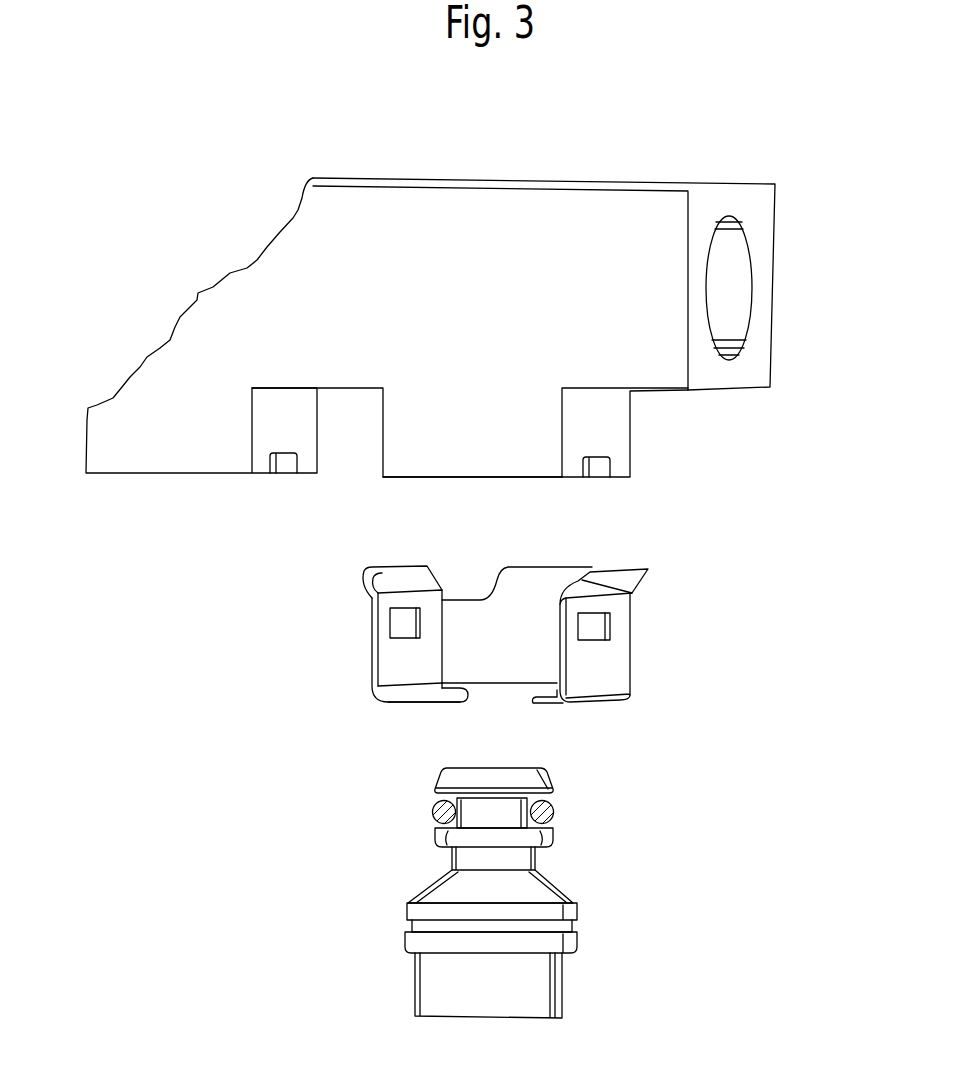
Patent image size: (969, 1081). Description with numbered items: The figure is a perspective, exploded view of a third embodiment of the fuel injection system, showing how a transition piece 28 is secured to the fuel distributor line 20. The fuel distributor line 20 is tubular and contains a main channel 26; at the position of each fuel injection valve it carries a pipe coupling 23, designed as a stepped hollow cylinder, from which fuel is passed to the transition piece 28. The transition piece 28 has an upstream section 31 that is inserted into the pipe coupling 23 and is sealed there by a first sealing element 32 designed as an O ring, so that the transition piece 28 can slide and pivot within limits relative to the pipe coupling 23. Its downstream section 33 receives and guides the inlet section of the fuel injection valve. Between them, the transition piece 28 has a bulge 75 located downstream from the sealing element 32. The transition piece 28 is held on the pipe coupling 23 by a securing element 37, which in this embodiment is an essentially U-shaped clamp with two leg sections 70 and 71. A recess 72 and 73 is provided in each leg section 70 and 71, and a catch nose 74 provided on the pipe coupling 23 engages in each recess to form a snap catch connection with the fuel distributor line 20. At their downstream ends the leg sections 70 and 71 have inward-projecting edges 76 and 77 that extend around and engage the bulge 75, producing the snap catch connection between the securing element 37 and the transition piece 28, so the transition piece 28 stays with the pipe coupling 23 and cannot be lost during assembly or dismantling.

The fuel distributor line 20 is at (541, 200).
The main channel 26 is at (733, 297).
The pipe coupling 23 is at (446, 455).
The catch nose 74 is at (600, 478).
The securing element 37 is at (524, 670).
The leg section 70 is at (382, 661).
The leg section 71 is at (620, 683).
The recess 72 is at (403, 615).
The recess 73 is at (605, 622).
The edge 76 is at (383, 705).
The edge 77 is at (533, 708).
The transition piece 28 is at (516, 893).
The first sealing element 32 is at (553, 810).
The bulge 75 is at (540, 838).
The upstream section 31 is at (460, 856).
The downstream section 33 is at (427, 983).